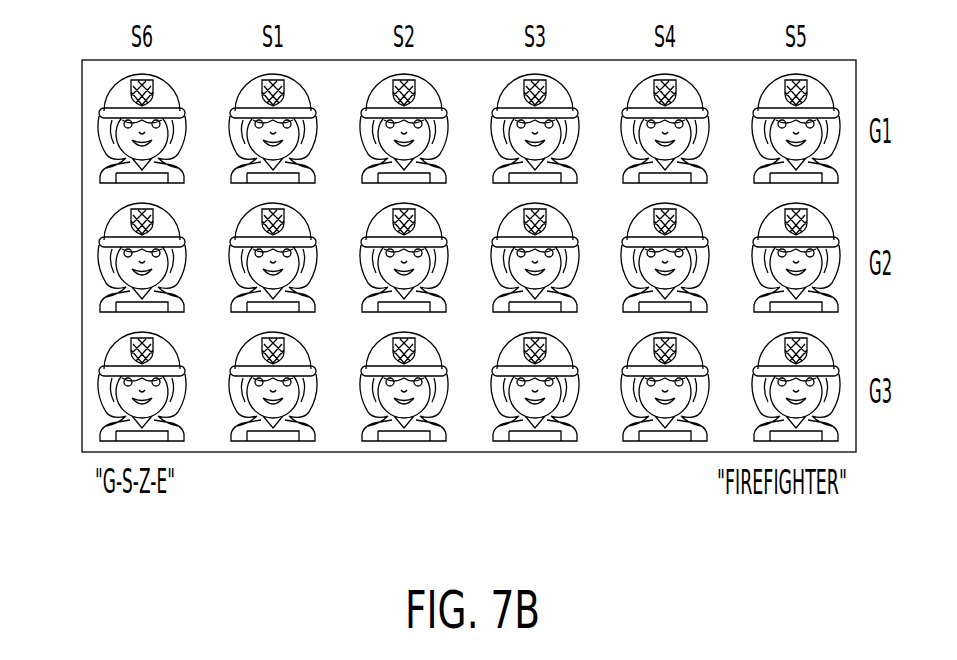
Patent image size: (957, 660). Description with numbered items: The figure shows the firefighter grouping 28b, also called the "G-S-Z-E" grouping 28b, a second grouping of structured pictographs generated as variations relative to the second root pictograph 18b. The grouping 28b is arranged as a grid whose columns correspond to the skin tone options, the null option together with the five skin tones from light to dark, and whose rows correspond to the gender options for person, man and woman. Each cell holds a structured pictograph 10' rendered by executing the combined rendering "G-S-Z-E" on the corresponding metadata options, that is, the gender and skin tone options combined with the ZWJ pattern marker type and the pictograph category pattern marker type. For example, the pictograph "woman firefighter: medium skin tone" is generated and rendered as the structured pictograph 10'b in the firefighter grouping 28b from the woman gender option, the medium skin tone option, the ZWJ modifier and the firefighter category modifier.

The structured pictograph 10' is at (111, 128).
The second root pictograph 18b is at (120, 263).
The structured pictograph 10'b is at (541, 421).
The firefighter grouping 28b is at (444, 306).